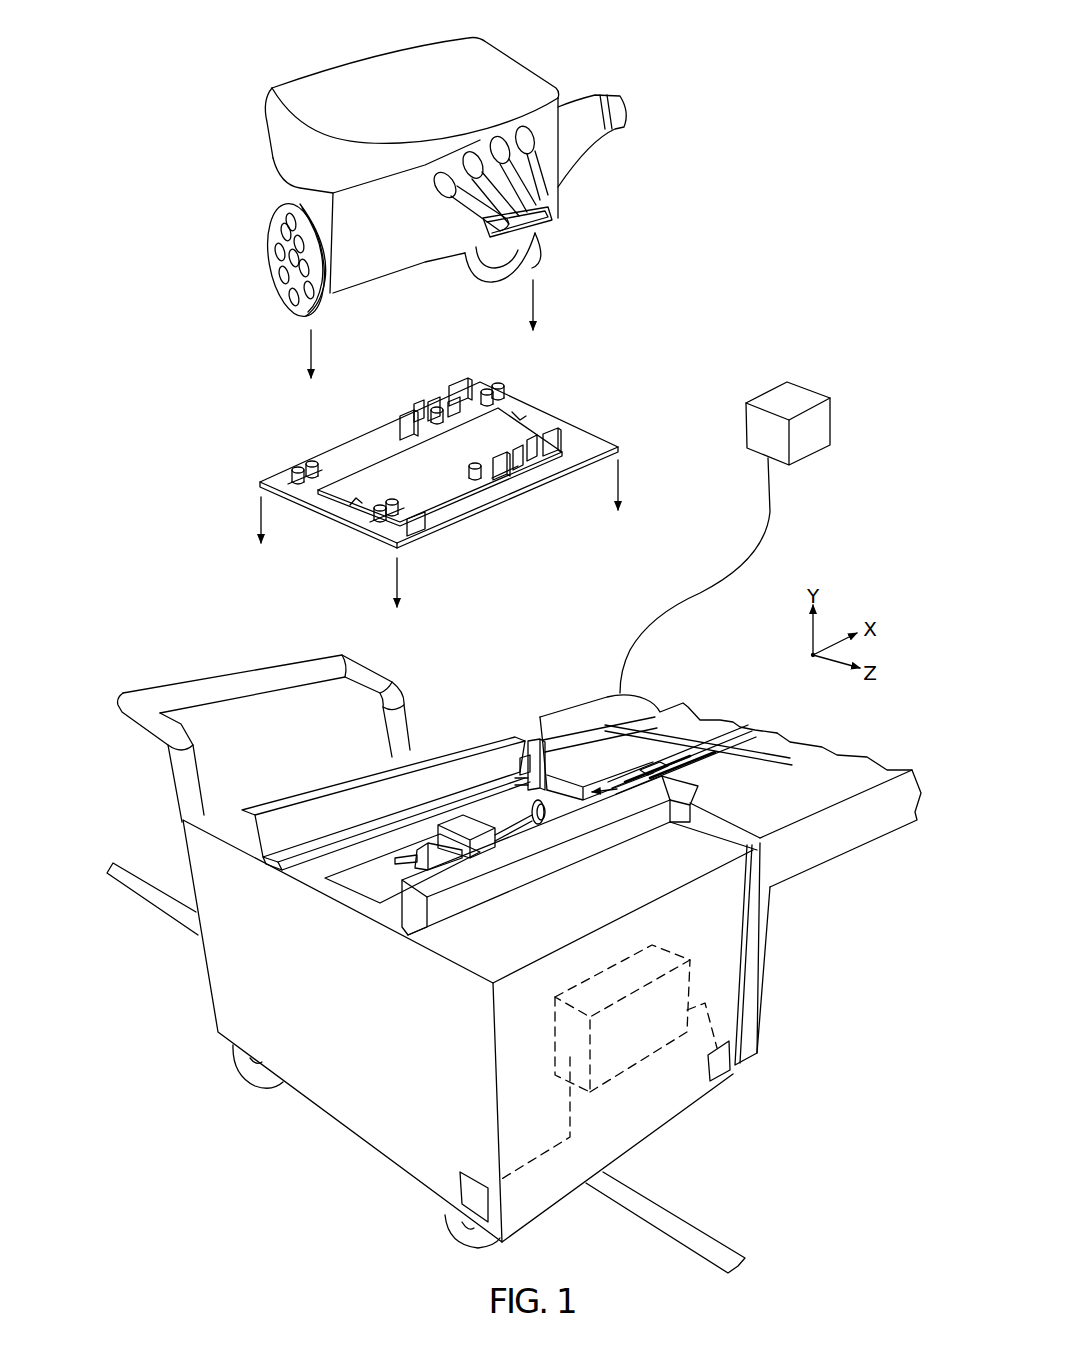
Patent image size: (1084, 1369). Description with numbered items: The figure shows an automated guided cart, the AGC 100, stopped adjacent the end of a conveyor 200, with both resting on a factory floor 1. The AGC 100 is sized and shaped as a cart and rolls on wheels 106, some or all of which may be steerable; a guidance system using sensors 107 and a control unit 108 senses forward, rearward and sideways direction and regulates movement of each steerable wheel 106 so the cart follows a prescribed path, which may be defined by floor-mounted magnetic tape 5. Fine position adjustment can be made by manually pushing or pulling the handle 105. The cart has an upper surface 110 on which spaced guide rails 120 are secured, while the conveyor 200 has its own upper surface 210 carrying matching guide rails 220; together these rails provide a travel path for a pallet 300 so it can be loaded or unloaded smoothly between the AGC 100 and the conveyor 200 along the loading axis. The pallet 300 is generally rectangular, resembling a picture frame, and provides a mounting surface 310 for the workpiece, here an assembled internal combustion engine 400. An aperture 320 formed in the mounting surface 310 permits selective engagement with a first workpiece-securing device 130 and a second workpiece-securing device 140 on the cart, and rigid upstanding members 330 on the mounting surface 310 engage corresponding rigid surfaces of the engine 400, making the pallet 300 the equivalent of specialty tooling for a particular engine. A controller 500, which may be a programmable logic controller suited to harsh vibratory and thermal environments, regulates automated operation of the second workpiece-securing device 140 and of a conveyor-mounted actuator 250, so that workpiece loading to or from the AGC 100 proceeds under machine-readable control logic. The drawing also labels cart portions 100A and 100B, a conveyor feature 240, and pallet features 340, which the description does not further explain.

The factory floor 1 is at (114, 975).
The floor-mounted magnetic tape 5 is at (717, 1237).
The AGC 100 is at (127, 663).
The support leg 100A is at (752, 947).
The cart body side 100B is at (330, 1047).
The handle 105 is at (205, 676).
The wheels 106 is at (255, 1083).
The sensors 107 is at (462, 1172).
The control unit 108 is at (613, 1057).
The upper surface 110 is at (515, 933).
The guide rails 120 is at (294, 827).
The first workpiece-securing device 130 is at (530, 735).
The second workpiece-securing device 140 is at (458, 825).
The conveyor 200 is at (568, 655).
The upper surface 210 is at (780, 805).
The guide rails 220 is at (803, 747).
The rail 240 is at (738, 730).
The conveyor-mounted actuator 250 is at (663, 757).
The pallet 300 is at (250, 449).
The mounting surface 310 is at (352, 457).
The aperture 320 is at (401, 484).
The upstanding members 330 is at (477, 362).
The frame corner 340 is at (517, 420).
The internal combustion engine 400 is at (215, 172).
The controller 500 is at (828, 383).